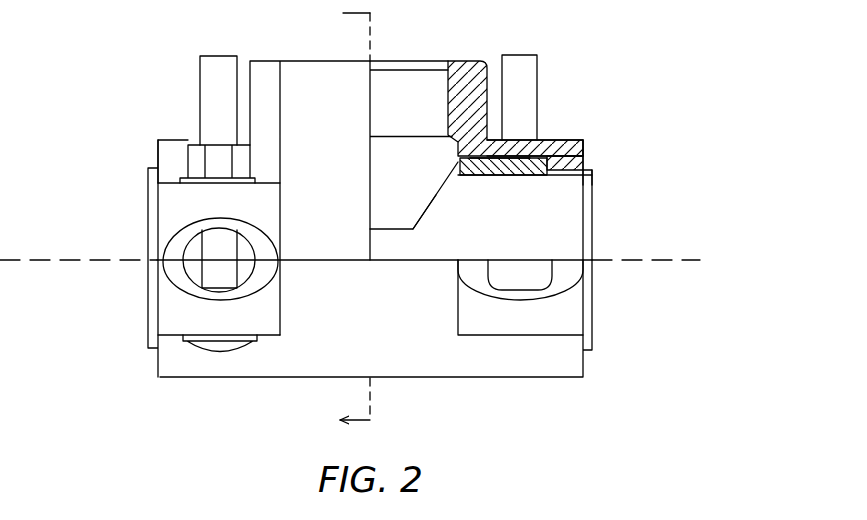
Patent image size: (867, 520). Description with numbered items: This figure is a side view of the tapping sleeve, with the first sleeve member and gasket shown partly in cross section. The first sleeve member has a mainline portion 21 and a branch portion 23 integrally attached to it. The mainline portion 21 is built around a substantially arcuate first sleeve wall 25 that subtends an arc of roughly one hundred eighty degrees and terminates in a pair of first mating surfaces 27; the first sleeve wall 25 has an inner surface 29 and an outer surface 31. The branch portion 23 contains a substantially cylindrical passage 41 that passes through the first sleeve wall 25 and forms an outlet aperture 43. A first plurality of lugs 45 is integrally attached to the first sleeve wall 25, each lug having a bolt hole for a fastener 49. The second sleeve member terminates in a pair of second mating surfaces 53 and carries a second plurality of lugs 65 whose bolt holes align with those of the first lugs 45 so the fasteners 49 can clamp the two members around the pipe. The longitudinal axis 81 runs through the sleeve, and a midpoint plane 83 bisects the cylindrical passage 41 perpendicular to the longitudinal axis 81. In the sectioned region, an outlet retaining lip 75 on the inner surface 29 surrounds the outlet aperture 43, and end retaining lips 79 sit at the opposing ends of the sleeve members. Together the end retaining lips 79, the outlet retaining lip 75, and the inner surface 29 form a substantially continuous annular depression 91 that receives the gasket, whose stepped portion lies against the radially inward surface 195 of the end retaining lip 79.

The mainline portion 21 is at (565, 135).
The branch portion 23 is at (266, 59).
The first sleeve wall 25 is at (566, 130).
The first mating surfaces 27 is at (165, 280).
The inner surface 29 is at (530, 174).
The outer surface 31 is at (178, 140).
The cylindrical passage 41 is at (448, 100).
The outlet aperture 43 is at (450, 160).
The first plurality of lugs 45 is at (172, 200).
The fastener 49 is at (201, 79).
The second mating surfaces 53 is at (163, 256).
The second plurality of lugs 65 is at (178, 312).
The outlet retaining lip 75 is at (444, 196).
The end retaining lips 79 is at (583, 153).
The longitudinal axis 81 is at (680, 259).
The midpoint plane 83 is at (372, 388).
The annular depression 91 is at (496, 160).
The radially inward surface 195 is at (585, 184).